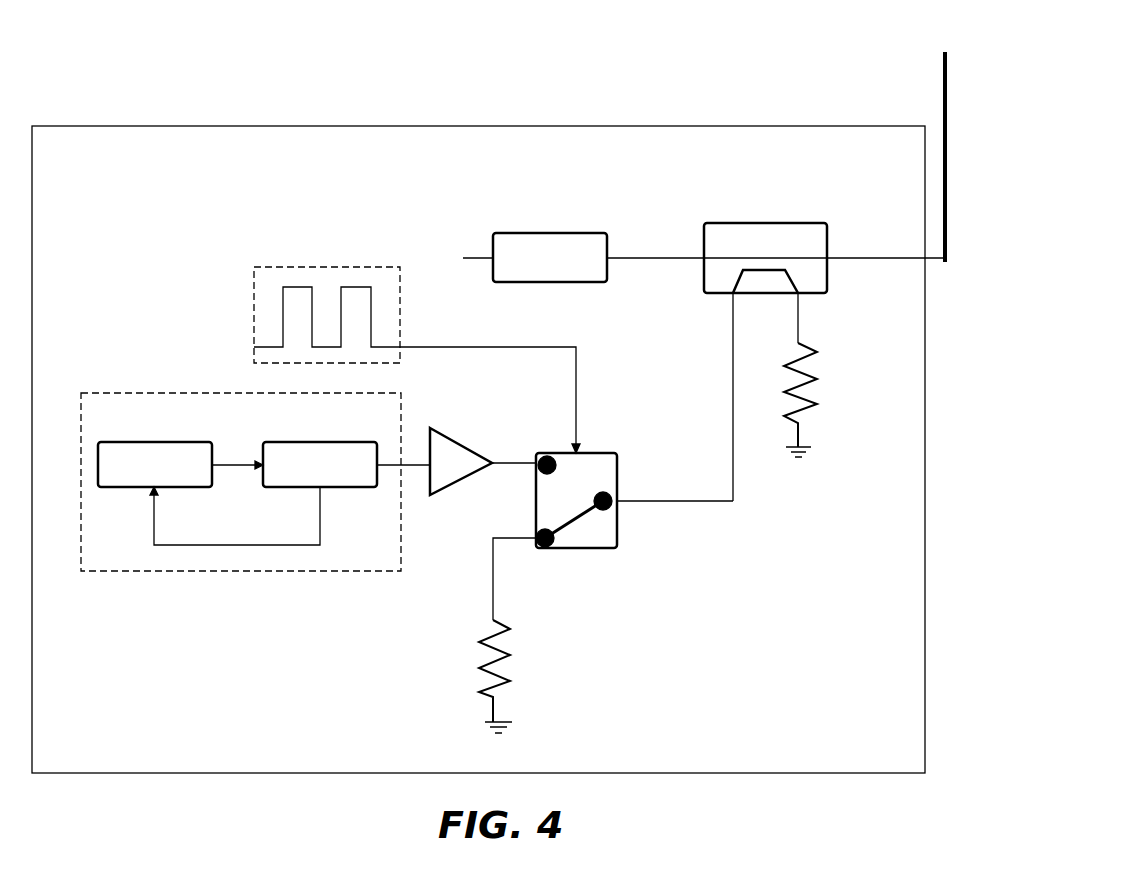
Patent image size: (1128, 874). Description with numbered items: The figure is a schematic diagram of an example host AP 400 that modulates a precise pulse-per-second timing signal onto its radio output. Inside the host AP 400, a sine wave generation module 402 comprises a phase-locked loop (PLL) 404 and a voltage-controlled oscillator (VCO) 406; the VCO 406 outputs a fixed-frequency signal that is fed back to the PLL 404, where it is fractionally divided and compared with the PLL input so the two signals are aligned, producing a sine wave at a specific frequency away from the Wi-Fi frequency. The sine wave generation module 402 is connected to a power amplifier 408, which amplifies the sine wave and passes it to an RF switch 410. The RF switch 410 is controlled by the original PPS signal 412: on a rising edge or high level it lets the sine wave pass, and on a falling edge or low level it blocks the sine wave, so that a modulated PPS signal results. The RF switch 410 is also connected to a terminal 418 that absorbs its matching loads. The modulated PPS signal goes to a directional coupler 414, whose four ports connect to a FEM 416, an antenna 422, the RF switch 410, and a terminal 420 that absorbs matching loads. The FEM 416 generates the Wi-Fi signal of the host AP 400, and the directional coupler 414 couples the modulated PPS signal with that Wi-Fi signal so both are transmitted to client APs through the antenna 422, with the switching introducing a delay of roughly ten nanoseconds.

The host AP 400 is at (850, 127).
The sine wave generation module 402 is at (241, 471).
The phase-locked loop 404 is at (165, 442).
The voltage-controlled oscillator 406 is at (335, 442).
The power amplifier 408 is at (462, 447).
The RF switch 410 is at (600, 453).
The original PPS signal 412 is at (355, 267).
The directional coupler 414 is at (828, 231).
The FEM 416 is at (565, 233).
The terminal 418 is at (506, 628).
The terminal 420 is at (814, 352).
The antenna 422 is at (943, 56).